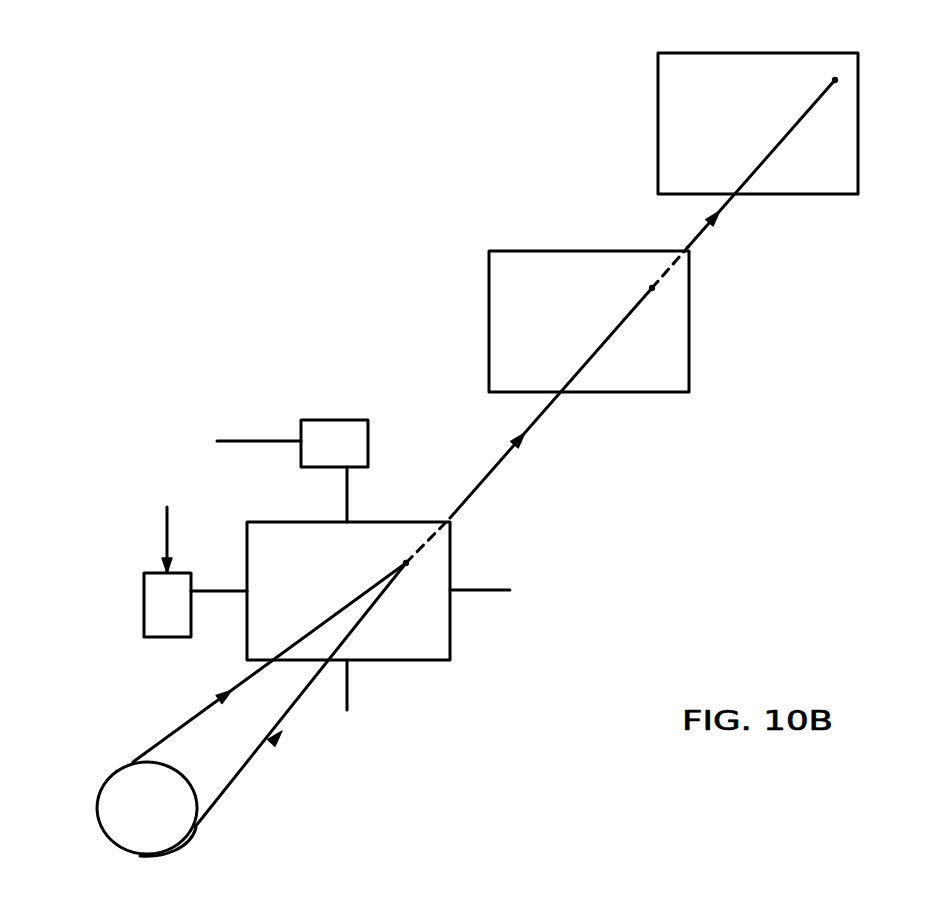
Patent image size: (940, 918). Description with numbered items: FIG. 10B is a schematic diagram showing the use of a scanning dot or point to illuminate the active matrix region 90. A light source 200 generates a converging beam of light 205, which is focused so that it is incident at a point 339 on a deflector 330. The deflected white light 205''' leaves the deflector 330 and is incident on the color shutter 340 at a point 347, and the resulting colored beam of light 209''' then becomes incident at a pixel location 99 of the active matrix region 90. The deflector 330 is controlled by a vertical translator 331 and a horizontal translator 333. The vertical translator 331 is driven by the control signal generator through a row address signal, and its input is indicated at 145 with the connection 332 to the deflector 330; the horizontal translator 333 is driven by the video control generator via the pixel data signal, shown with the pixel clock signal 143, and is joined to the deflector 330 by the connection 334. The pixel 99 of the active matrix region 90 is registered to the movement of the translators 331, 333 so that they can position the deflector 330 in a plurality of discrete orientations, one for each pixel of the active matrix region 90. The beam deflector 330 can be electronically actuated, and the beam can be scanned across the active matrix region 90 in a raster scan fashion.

The light source 200 is at (165, 820).
The converging beam of light 205 is at (269, 695).
The deflector 330 is at (433, 660).
The point 339 is at (408, 565).
The vertical translator 331 is at (142, 622).
The control input 145 is at (167, 532).
The control connection 332 is at (212, 590).
The horizontal translator 333 is at (335, 419).
The connection 334 is at (350, 496).
The pixel clock signal 143 is at (256, 440).
The deflected white light 205''' is at (551, 403).
The color shutter 340 is at (667, 392).
The beam focus point 347 is at (654, 290).
The colored beam of light 209''' is at (761, 170).
The active matrix region 90 is at (843, 194).
The pixel location 99 is at (836, 81).